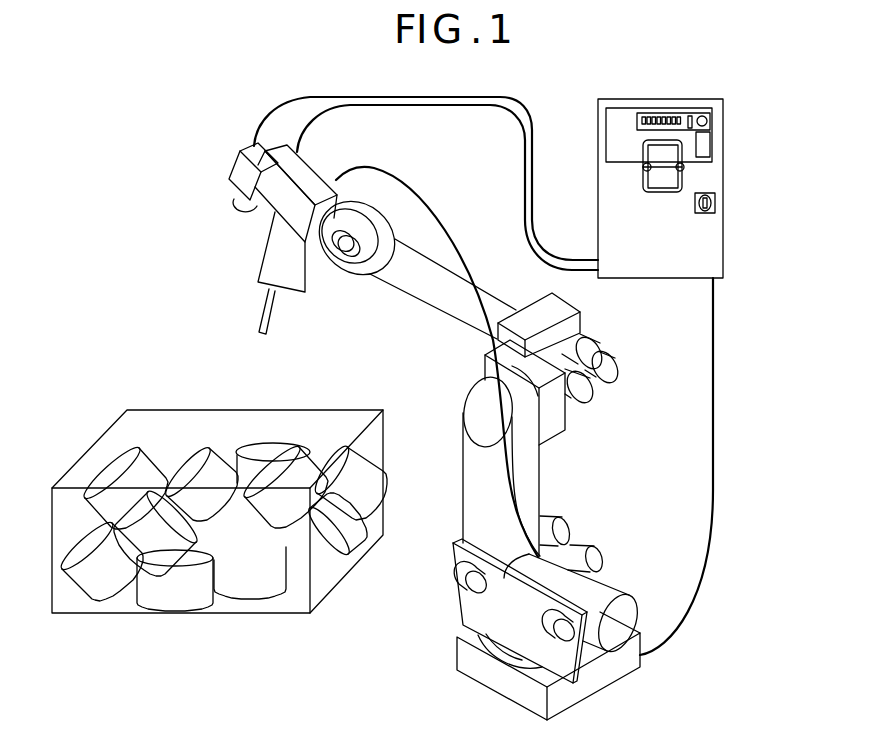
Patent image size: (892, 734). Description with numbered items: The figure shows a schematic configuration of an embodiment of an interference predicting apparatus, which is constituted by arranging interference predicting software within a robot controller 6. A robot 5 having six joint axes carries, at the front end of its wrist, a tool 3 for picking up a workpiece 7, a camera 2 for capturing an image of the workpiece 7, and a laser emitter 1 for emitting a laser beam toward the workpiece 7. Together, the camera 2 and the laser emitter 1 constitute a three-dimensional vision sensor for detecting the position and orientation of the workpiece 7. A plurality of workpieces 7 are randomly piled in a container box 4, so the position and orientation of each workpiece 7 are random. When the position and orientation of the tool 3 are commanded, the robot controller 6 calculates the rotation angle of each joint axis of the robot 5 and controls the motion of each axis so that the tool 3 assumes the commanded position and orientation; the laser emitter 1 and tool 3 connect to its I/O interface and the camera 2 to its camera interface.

The laser emitter 1 is at (312, 178).
The camera 2 is at (263, 148).
The tool 3 is at (304, 266).
The container box 4 is at (160, 408).
The robot 5 is at (607, 588).
The robot controller 6 is at (710, 99).
The workpiece 7 is at (177, 595).